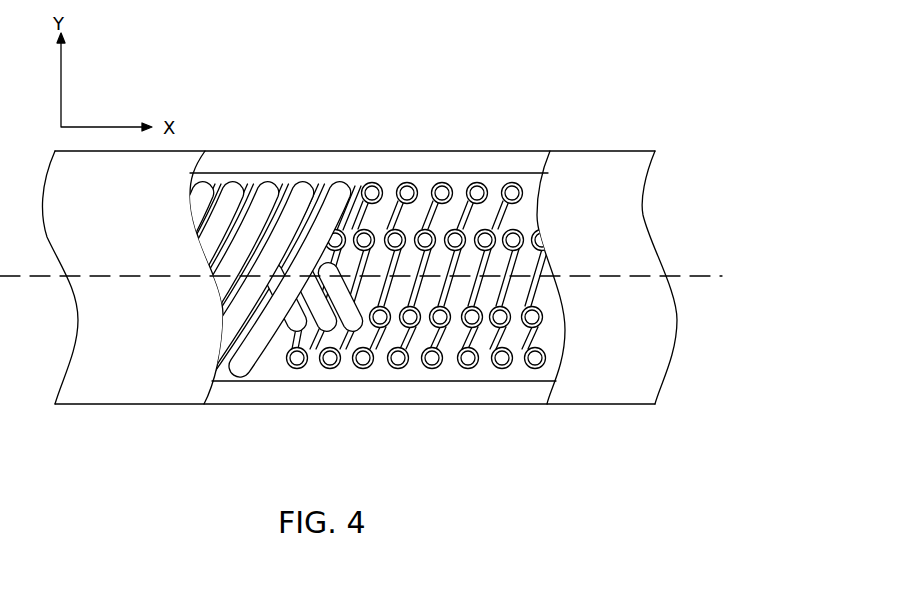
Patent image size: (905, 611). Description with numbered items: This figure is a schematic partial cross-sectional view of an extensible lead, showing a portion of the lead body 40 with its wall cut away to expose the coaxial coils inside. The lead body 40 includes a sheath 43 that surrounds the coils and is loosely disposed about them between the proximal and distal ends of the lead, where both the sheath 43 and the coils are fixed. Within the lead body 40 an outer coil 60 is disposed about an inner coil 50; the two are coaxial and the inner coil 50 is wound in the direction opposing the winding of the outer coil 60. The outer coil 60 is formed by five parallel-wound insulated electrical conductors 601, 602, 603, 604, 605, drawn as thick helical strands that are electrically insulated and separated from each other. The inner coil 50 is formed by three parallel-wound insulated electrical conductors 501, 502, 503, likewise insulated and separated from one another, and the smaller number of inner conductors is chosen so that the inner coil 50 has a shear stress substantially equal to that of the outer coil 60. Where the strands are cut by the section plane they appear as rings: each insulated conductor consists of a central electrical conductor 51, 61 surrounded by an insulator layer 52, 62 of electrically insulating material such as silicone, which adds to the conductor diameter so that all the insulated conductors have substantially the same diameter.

The lead body 40 is at (530, 403).
The sheath 43 is at (228, 390).
The inner coil 50 is at (361, 303).
The electrical conductor 501 is at (290, 333).
The electrical conductor 502 is at (316, 330).
The electrical conductor 503 is at (366, 345).
The electrical conductor 51 is at (467, 328).
The insulator layer 52 is at (468, 318).
The outer coil 60 is at (347, 208).
The electrical conductor 601 is at (203, 182).
The electrical conductor 602 is at (233, 182).
The electrical conductor 603 is at (272, 182).
The electrical conductor 604 is at (302, 182).
The electrical conductor 605 is at (348, 182).
The electrical conductor 61 is at (512, 183).
The insulator layer 62 is at (511, 193).